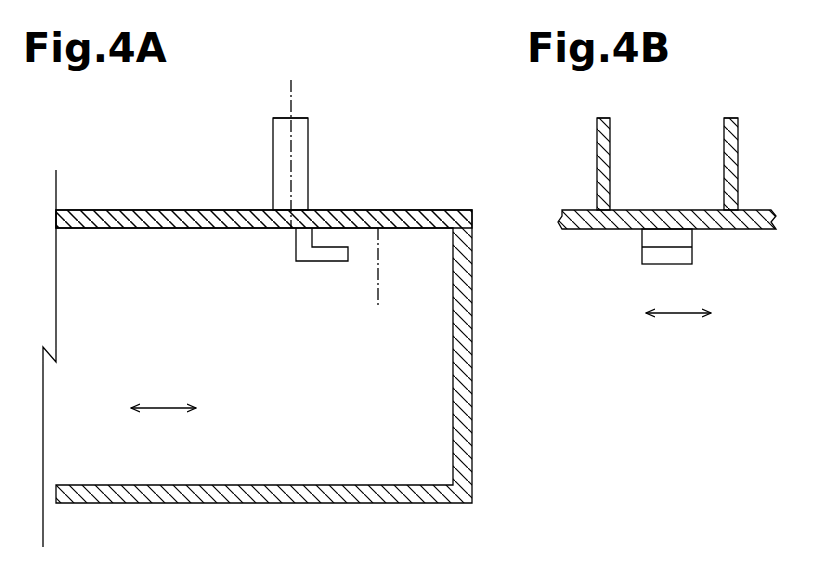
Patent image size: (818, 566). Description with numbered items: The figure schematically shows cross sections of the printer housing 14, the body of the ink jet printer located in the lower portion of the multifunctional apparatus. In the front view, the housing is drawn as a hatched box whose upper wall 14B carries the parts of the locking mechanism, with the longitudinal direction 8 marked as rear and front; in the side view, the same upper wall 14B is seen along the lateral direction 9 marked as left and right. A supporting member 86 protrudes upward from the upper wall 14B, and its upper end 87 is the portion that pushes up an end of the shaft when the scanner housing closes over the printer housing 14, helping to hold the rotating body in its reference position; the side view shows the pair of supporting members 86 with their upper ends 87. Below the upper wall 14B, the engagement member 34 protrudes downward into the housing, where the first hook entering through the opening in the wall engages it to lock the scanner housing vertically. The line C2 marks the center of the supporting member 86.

In FIG. 4A, the printer housing 14 is at (472, 382).
In FIG. 4A, the upper wall 14B is at (145, 210).
In FIG. 4B, the upper wall 14B is at (726, 231).
In FIG. 4A, the supporting member 86 is at (273, 177).
In FIG. 4B, the supporting member 86 is at (597, 165).
In FIG. 4A, the upper end 87 is at (291, 117).
In FIG. 4B, the upper end 87 is at (598, 122).
In FIG. 4A, the engagement member 34 is at (312, 262).
In FIG. 4B, the engagement member 34 is at (642, 257).
In FIG. 4A, the center line C2 is at (293, 98).
In FIG. 4A, the longitudinal direction 8 is at (163, 410).
In FIG. 4B, the lateral direction 9 is at (678, 315).